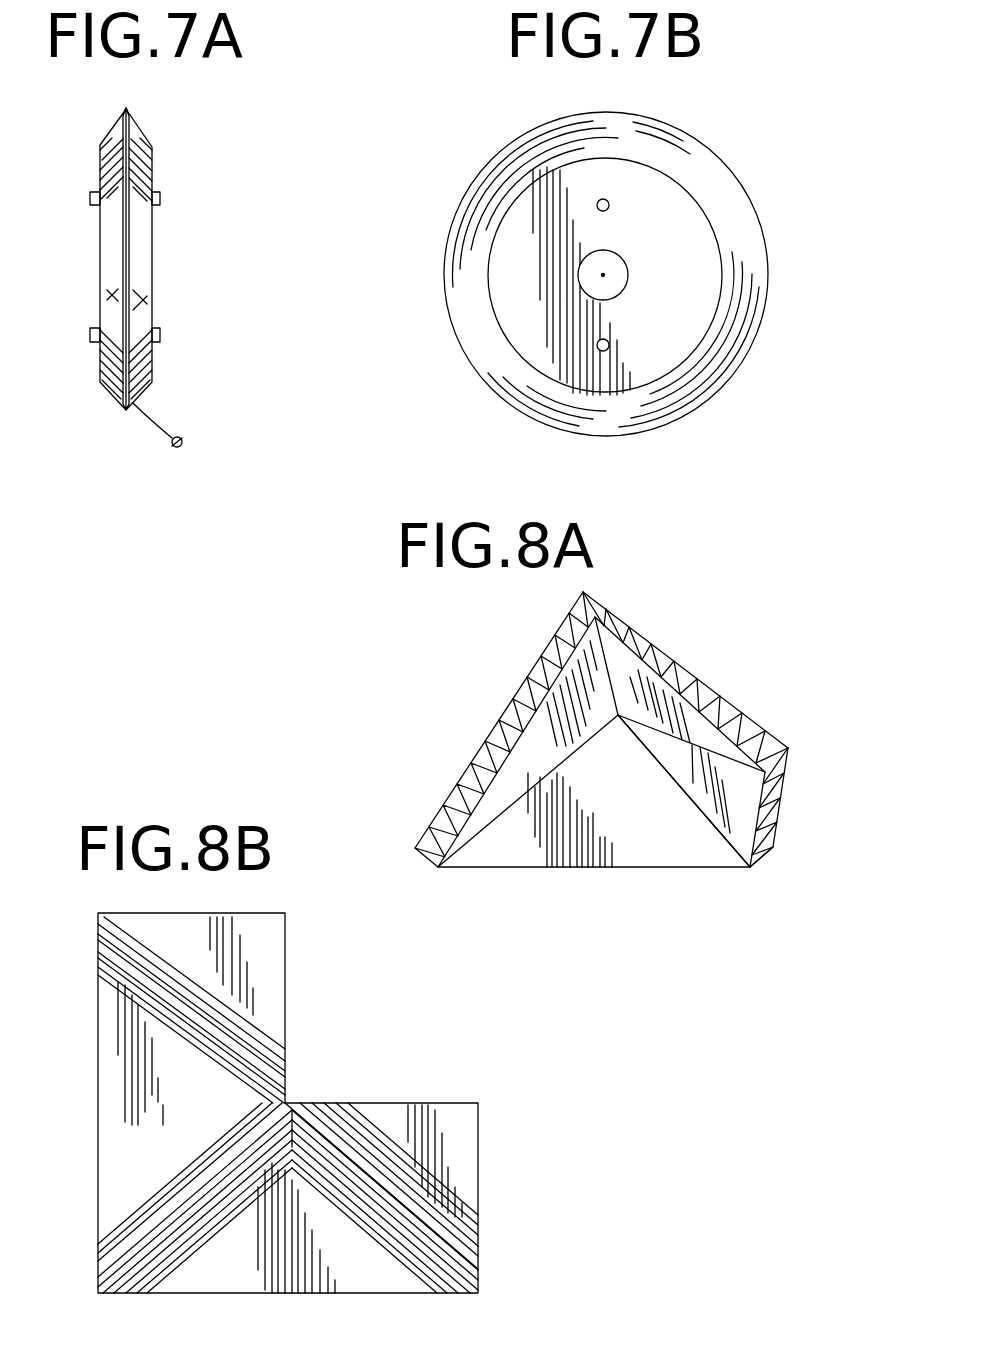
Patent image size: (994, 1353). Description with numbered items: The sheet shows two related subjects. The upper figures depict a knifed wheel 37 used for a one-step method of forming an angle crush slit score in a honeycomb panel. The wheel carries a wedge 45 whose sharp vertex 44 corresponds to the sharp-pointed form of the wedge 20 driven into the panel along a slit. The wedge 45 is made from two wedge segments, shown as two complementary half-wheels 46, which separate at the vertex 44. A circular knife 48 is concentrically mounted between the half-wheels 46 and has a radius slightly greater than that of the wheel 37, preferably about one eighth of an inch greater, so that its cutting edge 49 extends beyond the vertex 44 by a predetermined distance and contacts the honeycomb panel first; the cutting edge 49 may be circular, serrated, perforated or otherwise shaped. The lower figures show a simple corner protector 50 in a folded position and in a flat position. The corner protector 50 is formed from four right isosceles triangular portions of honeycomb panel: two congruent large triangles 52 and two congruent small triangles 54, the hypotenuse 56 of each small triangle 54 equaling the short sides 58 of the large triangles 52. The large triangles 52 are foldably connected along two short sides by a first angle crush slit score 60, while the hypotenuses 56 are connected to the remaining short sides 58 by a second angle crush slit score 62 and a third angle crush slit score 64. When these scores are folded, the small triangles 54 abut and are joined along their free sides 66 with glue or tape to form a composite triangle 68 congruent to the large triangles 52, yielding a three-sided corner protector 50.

In FIG. 7B, the wedge 20 is at (670, 165).
In FIG. 7A, the knifed wheel 37 is at (181, 170).
In FIG. 7A, the vertex 44 is at (135, 121).
In FIG. 7B, the vertex 44 is at (643, 137).
In FIG. 7A, the wedge 45 is at (100, 143).
In FIG. 7A, the half-wheels 46 is at (100, 262).
In FIG. 7B, the half-wheels 46 is at (672, 210).
In FIG. 7A, the circular knife 48 is at (128, 116).
In FIG. 7B, the circular knife 48 is at (758, 275).
In FIG. 7A, the cutting edge 49 is at (126, 410).
In FIG. 7B, the cutting edge 49 is at (747, 198).
In FIG. 8A, the corner protector 50 is at (707, 873).
In FIG. 8A, the large triangles 52 is at (518, 772).
In FIG. 8B, the large triangles 52 is at (125, 1095).
In FIG. 8A, the small triangles 54 is at (657, 693).
In FIG. 8B, the small triangles 54 is at (263, 955).
In FIG. 8B, the hypotenuse 56 is at (245, 1002).
In FIG. 8B, the short sides 58 is at (137, 998).
In FIG. 8A, the first angle crush slit score 60 is at (495, 823).
In FIG. 8B, the first angle crush slit score 60 is at (108, 1247).
In FIG. 8A, the second angle crush slit score 62 is at (600, 642).
In FIG. 8B, the second angle crush slit score 62 is at (118, 938).
In FIG. 8A, the third angle crush slit score 64 is at (687, 795).
In FIG. 8B, the third angle crush slit score 64 is at (453, 1260).
In FIG. 8A, the free sides 66 is at (702, 743).
In FIG. 8B, the free sides 66 is at (285, 1040).
In FIG. 8A, the composite triangle 68 is at (728, 770).